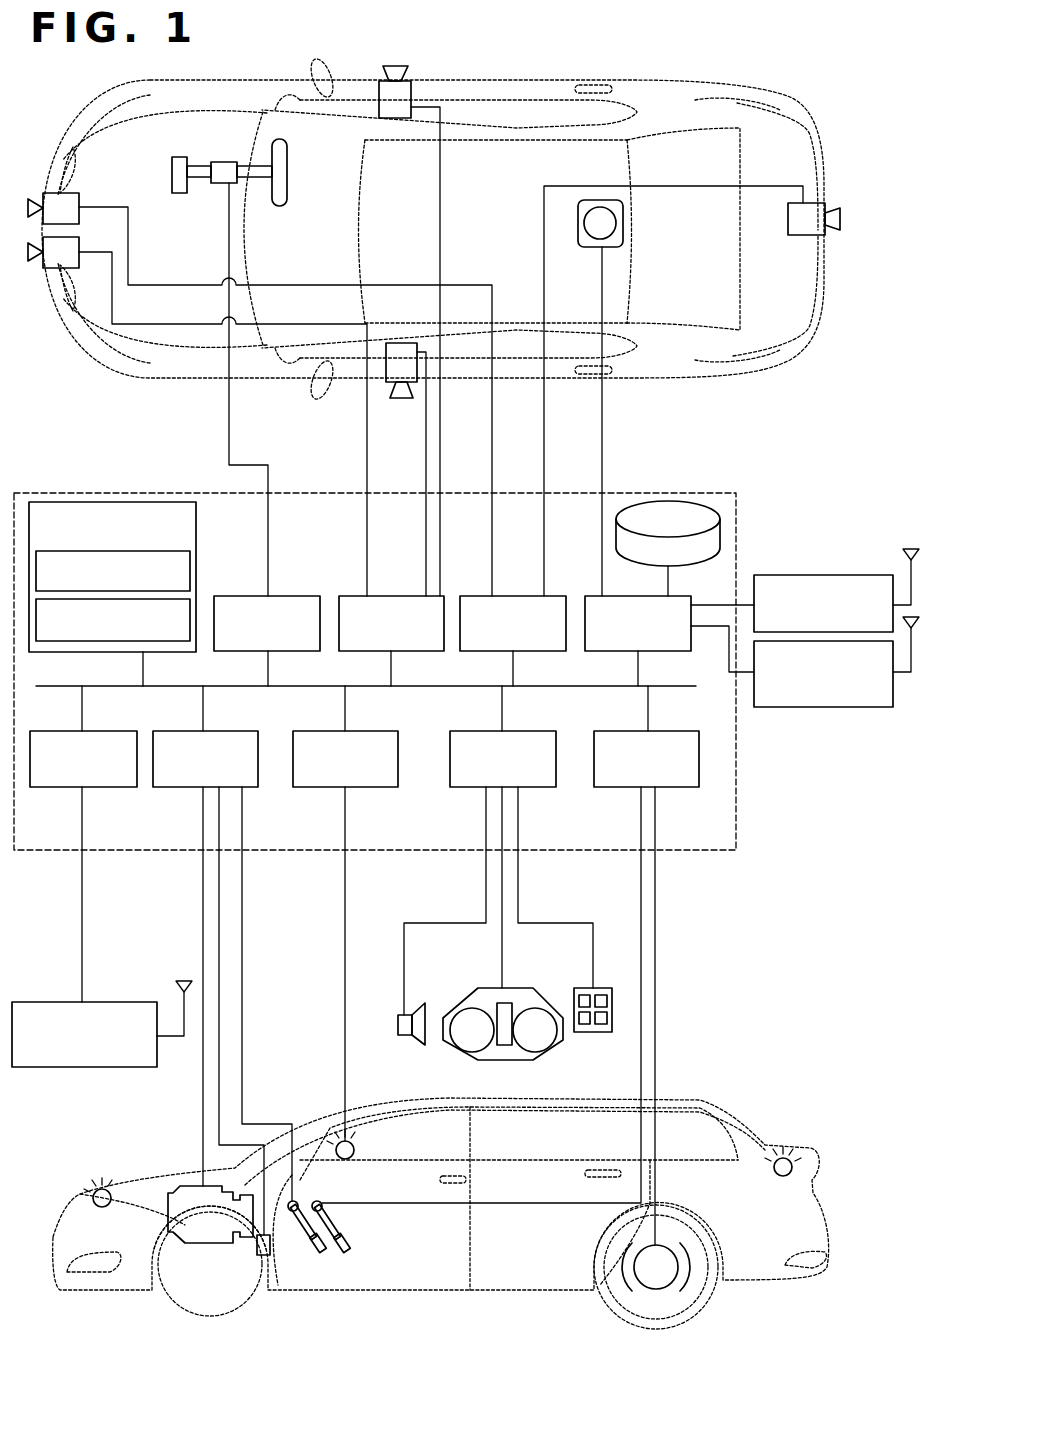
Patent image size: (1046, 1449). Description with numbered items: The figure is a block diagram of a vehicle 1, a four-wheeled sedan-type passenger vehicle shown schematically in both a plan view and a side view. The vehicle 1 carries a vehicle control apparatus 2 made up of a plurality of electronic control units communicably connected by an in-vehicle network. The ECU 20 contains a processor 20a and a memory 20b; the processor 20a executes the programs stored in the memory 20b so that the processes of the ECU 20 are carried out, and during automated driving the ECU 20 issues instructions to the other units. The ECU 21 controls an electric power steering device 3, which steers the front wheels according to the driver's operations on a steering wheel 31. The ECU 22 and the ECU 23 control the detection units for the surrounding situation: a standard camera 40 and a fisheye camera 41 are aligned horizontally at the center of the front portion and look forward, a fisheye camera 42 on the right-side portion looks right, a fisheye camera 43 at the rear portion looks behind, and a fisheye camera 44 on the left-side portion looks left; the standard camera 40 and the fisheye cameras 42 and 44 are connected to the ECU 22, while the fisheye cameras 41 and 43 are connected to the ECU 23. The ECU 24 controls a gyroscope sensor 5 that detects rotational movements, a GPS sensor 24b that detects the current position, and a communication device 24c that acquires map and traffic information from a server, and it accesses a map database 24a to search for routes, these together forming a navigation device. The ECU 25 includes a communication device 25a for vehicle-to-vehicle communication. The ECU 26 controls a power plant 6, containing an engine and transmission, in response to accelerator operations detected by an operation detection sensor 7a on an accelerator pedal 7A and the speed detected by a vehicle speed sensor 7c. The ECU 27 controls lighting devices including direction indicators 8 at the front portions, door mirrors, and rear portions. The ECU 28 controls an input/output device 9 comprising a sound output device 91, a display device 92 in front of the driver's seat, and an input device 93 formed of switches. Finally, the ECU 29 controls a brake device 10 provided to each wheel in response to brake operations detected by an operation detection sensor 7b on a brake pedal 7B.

The vehicle 1 is at (836, 132).
The vehicle control apparatus 2 is at (722, 863).
The electric power steering device 3 is at (180, 195).
The gyroscope sensor 5 is at (625, 222).
The power plant 6 is at (176, 1185).
The operation detection sensor 7a is at (297, 1200).
The operation detection sensor 7b is at (322, 1203).
The accelerator pedal 7A is at (325, 1248).
The brake pedal 7B is at (346, 1238).
The vehicle speed sensor 7c is at (266, 1258).
The direction indicators 8 is at (93, 1192).
The input/output device 9 is at (491, 1037).
The brake device 10 is at (660, 1290).
The ECU 20 is at (142, 551).
The processor 20a is at (190, 552).
The memory 20b is at (190, 600).
The ECU 21 is at (296, 596).
The ECU 22 is at (394, 596).
The ECU 23 is at (514, 596).
The ECU 24 is at (574, 596).
The map database 24a is at (665, 501).
The GPS sensor 24b is at (812, 575).
The communication device 24c is at (826, 708).
The ECU 25 is at (113, 788).
The communication device 25a is at (78, 1068).
The ECU 26 is at (173, 788).
The ECU 27 is at (376, 788).
The ECU 28 is at (543, 788).
The ECU 29 is at (685, 788).
The steering wheel 31 is at (280, 208).
The standard camera 40 is at (43, 270).
The fisheye camera 41 is at (78, 193).
The fisheye camera 42 is at (400, 66).
The fisheye camera 43 is at (830, 208).
The fisheye camera 44 is at (401, 399).
The sound output device 91 is at (398, 1016).
The display device 92 is at (466, 994).
The input device 93 is at (592, 1033).